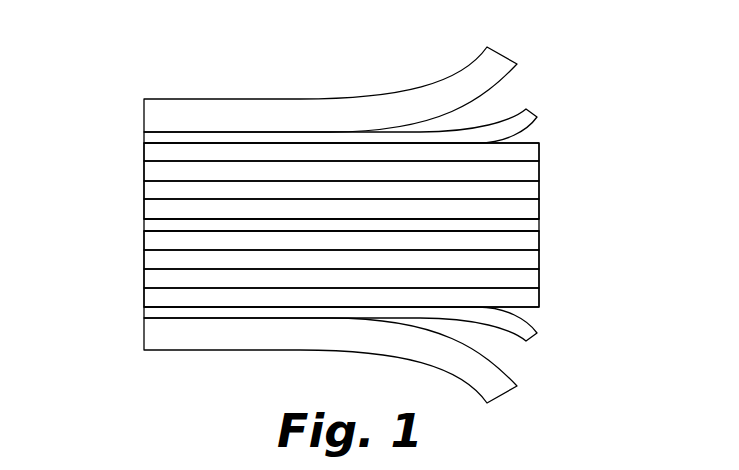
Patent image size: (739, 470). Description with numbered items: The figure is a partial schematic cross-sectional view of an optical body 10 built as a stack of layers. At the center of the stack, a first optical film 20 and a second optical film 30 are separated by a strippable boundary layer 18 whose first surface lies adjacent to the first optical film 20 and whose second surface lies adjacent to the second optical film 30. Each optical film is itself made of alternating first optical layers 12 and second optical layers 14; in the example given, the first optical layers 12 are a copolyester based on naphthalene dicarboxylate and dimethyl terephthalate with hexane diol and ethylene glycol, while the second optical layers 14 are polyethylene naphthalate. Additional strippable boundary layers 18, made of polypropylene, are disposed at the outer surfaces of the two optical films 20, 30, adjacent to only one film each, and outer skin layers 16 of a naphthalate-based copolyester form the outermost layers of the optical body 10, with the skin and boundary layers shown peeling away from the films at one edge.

The optical body 10 is at (330, 208).
The first optical layers 12 is at (155, 173).
The second optical layers 14 is at (155, 152).
The outer skin layers 16 is at (303, 105).
The strippable boundary layer 18 is at (527, 114).
The first optical film 20 is at (83, 102).
The second optical film 30 is at (83, 228).